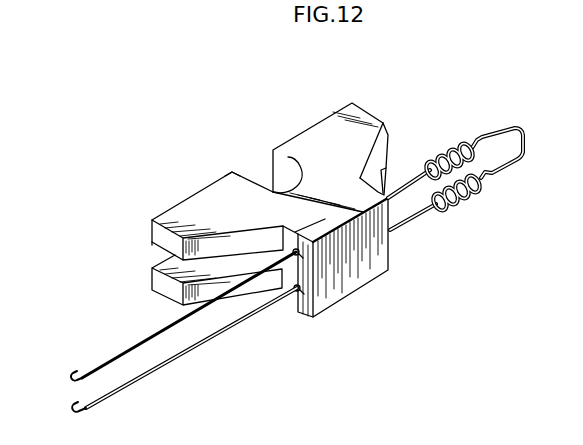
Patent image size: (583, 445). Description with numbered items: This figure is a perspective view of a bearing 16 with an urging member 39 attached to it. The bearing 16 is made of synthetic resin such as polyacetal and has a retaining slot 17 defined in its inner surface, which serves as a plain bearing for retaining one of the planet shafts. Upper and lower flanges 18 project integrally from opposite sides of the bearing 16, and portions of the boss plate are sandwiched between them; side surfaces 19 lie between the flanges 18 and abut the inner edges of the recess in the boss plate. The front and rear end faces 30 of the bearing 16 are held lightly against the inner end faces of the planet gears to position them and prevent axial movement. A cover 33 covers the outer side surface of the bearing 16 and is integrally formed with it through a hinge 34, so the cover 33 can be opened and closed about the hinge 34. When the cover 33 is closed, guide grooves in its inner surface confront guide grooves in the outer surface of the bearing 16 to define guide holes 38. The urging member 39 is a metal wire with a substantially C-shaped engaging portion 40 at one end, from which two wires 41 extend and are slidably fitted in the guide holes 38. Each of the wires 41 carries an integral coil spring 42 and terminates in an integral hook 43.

The bearing 16 is at (318, 118).
The retaining slot 17 is at (292, 168).
The upper and lower flanges 18 is at (383, 168).
The side surfaces 19 is at (268, 258).
The front and rear end faces 30 is at (262, 194).
The cover 33 is at (391, 255).
The hinge 34 is at (300, 308).
The guide holes 38 is at (300, 256).
The urging member 39 is at (501, 134).
The engaging portion 40 is at (525, 146).
The wires 41 is at (180, 322).
The coil spring 42 is at (446, 158).
The hook 43 is at (67, 408).